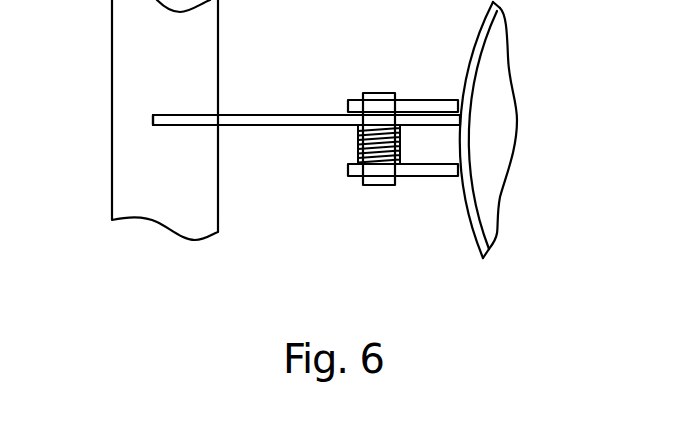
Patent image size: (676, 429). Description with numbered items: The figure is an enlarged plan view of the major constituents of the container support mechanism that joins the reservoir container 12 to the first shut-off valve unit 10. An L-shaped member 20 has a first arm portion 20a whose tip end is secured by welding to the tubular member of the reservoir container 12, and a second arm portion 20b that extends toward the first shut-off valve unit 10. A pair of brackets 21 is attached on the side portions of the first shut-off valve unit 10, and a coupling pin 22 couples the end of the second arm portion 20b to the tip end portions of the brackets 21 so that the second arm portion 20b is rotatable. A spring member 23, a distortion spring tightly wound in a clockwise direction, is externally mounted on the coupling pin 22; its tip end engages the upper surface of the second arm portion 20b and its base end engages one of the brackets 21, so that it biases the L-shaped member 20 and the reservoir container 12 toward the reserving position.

The first shut-off valve unit 10 is at (497, 117).
The reservoir container 12 is at (148, 60).
The L-shaped member 20 is at (251, 83).
The first arm portion 20a is at (172, 126).
The second arm portion 20b is at (280, 114).
The brackets 21 is at (430, 104).
The coupling pin 22 is at (377, 92).
The spring member 23 is at (357, 151).